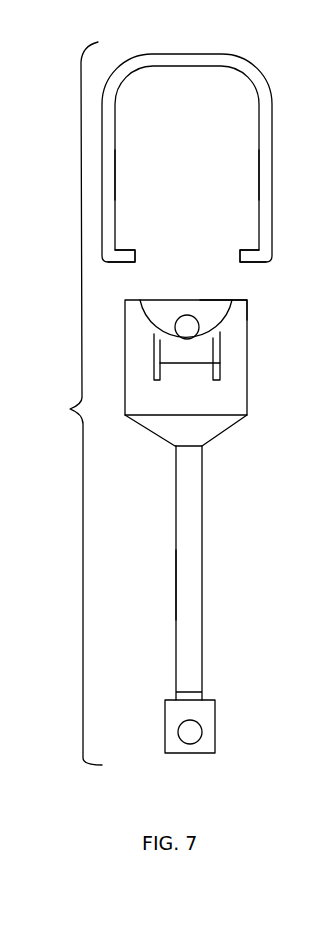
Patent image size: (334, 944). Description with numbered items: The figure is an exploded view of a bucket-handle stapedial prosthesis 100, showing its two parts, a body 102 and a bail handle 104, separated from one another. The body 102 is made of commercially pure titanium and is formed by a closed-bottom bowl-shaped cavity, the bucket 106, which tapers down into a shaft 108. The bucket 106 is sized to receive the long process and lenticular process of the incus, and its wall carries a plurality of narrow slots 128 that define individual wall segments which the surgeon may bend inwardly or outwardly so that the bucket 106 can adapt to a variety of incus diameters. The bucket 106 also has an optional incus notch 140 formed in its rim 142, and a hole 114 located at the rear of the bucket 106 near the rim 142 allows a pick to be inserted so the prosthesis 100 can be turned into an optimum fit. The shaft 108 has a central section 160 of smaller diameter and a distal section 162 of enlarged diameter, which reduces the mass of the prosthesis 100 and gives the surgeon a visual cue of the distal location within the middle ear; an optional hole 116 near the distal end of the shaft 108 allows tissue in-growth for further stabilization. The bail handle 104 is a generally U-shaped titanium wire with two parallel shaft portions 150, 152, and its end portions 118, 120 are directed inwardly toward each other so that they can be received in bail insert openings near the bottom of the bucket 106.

The stapedial prosthesis 100 is at (67, 403).
The body 102 is at (223, 433).
The bail handle 104 is at (272, 128).
The bucket 106 is at (247, 348).
The shaft 108 is at (202, 561).
The hole 114 is at (188, 316).
The hole 116 is at (198, 730).
The end portion 118 is at (150, 237).
The end portion 120 is at (248, 250).
The slots 128 is at (160, 365).
The incus notch 140 is at (207, 332).
The rim 142 is at (242, 296).
The parallel shaft portion 150 is at (113, 177).
The parallel shaft portion 152 is at (262, 165).
The central section 160 is at (185, 578).
The distal section 162 is at (168, 714).